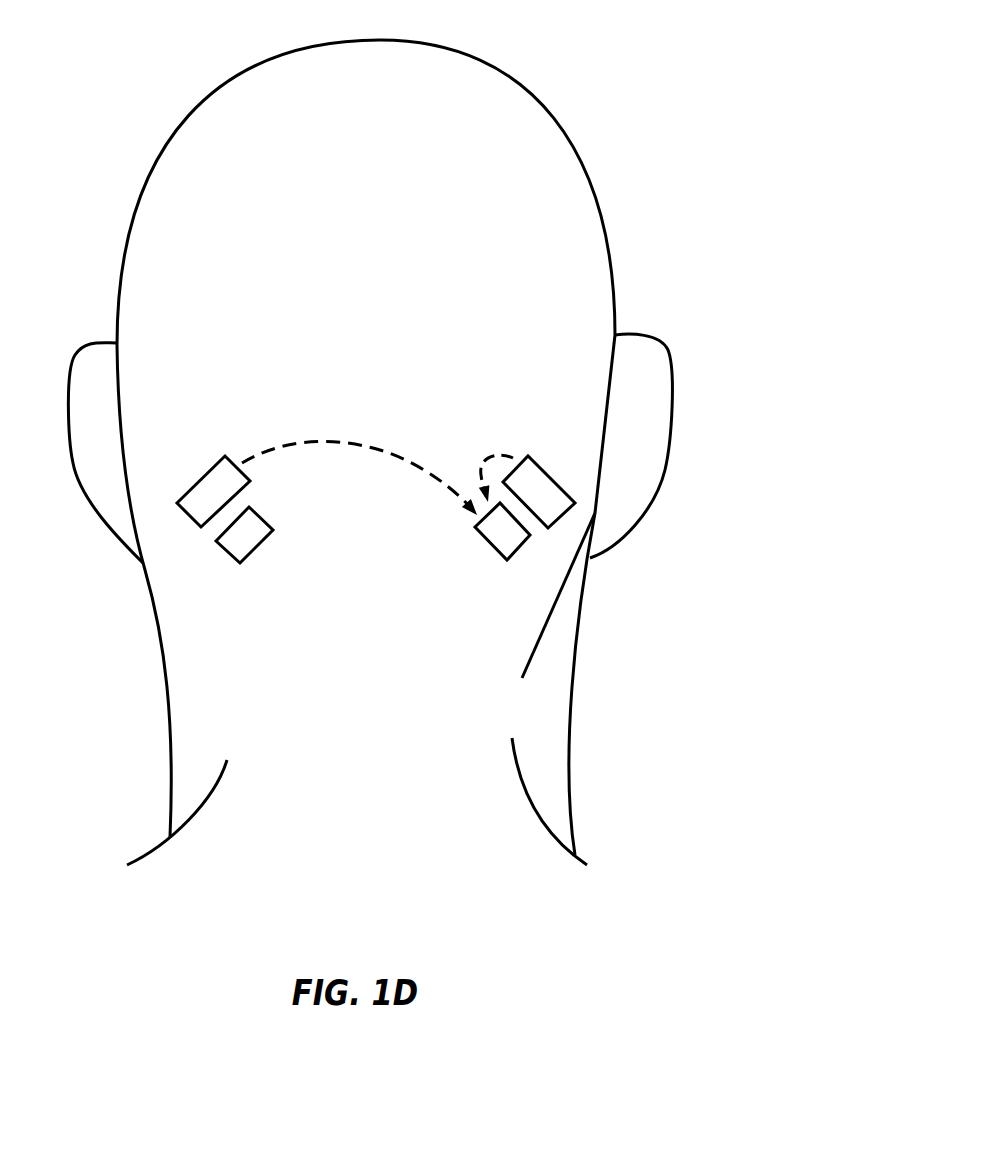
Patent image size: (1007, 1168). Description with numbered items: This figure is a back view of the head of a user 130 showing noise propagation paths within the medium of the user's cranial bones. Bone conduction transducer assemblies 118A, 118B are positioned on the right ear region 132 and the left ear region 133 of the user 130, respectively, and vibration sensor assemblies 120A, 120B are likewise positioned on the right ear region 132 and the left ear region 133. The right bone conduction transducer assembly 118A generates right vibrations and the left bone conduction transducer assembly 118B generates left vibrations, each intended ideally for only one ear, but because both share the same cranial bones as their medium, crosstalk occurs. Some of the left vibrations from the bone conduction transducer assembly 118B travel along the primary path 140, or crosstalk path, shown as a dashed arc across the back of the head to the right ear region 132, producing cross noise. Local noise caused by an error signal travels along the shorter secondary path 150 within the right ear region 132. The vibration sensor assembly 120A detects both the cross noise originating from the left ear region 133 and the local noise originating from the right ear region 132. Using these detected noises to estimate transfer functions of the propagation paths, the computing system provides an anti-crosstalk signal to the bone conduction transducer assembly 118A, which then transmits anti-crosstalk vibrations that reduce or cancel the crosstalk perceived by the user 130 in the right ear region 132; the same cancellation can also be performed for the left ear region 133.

The user 130 is at (381, 436).
The bone conduction transducer assembly 118A is at (545, 393).
The bone conduction transducer assembly 118B is at (187, 397).
The vibration sensor assembly 120A is at (473, 600).
The vibration sensor assembly 120B is at (267, 603).
The right ear region 132 is at (619, 527).
The left ear region 133 is at (112, 528).
The primary path 140 is at (359, 395).
The secondary path 150 is at (445, 404).